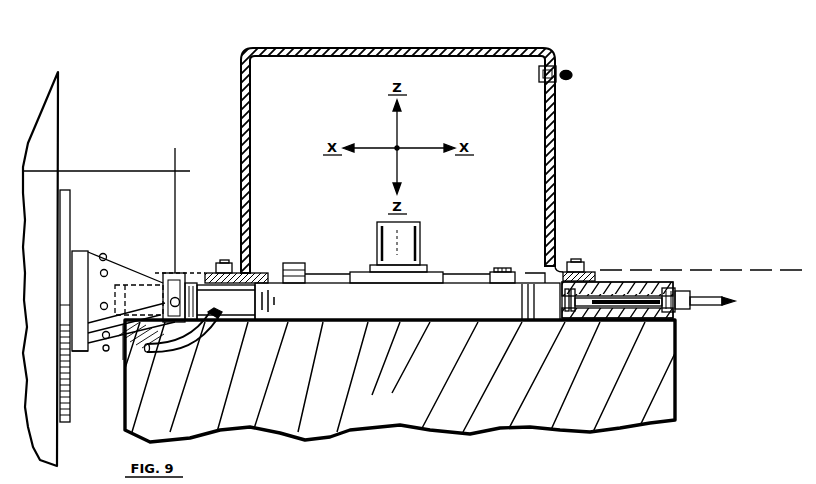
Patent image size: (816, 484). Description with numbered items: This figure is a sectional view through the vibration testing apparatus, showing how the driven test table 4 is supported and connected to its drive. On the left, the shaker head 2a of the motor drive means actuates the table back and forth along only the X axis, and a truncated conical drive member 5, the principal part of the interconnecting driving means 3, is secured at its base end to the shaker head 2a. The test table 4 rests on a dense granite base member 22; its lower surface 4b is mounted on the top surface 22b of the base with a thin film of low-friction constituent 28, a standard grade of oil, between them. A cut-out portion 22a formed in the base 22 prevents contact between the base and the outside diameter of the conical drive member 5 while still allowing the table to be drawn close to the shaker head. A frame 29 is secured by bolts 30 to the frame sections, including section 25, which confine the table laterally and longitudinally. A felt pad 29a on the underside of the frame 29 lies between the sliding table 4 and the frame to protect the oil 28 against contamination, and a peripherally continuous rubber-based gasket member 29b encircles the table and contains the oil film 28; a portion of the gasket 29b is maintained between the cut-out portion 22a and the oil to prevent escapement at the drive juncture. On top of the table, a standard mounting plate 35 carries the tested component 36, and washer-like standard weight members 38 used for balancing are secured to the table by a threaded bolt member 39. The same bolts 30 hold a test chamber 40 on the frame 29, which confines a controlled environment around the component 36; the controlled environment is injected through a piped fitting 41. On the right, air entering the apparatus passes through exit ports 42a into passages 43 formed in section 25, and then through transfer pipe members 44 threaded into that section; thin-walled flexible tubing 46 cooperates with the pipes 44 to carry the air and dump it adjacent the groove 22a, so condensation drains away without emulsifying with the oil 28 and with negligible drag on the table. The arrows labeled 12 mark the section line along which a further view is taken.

The machine frame wall 12 is at (43, 130).
The shaker head 2a is at (64, 213).
The truncated conical drive member 5 is at (120, 264).
The interconnecting driving means 3 is at (184, 248).
The bolts 30 is at (222, 262).
The frame 29 is at (262, 273).
The pad 29a is at (292, 265).
The tested component 36 is at (417, 221).
The mounting plate 35 is at (430, 275).
The standard weight members 38 is at (490, 276).
The threaded bolt member 39 is at (500, 268).
The transfer pipe members 44 is at (522, 300).
The section 25 is at (635, 290).
The passages 43 is at (666, 290).
The exit ports 42a is at (682, 311).
The driven test table 4 is at (410, 309).
The flexible tubing 46 is at (172, 343).
The cut-out portion 22a is at (134, 357).
The gasket member 29b is at (232, 328).
The low-friction type constituent 28 is at (370, 324).
The lower surface 4b is at (424, 322).
The top surface 22b is at (489, 328).
The base member 22 is at (372, 391).
The test chamber 40 is at (377, 48).
The piped fitting 41 is at (563, 74).